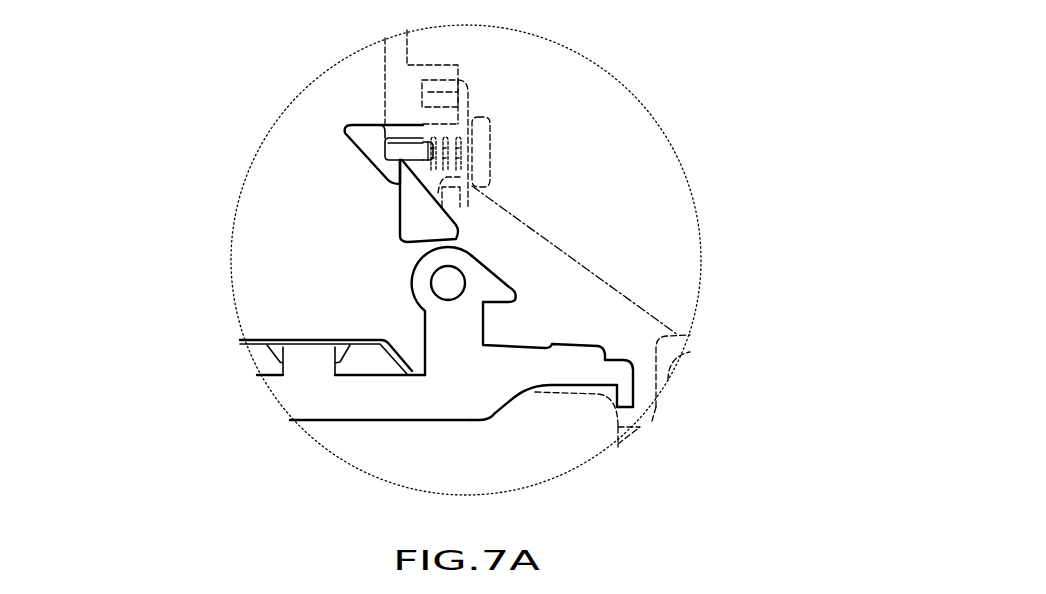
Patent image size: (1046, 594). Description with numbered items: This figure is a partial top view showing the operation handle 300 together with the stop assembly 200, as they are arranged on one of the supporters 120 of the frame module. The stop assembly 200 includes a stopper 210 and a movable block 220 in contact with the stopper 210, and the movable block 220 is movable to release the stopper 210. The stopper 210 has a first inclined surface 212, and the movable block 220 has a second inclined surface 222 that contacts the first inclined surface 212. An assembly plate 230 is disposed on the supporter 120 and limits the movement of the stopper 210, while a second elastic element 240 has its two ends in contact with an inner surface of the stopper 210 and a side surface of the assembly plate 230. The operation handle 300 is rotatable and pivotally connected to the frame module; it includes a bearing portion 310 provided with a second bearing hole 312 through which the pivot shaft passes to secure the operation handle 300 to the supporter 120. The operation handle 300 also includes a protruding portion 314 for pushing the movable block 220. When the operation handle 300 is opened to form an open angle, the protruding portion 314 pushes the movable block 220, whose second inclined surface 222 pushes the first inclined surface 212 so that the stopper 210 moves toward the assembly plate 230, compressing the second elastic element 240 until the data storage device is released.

The supporter 120 is at (390, 80).
The stop assembly 200 is at (205, 89).
The stopper 210 is at (348, 128).
The first inclined surface 212 is at (428, 153).
The movable block 220 is at (420, 213).
The second inclined surface 222 is at (427, 188).
The assembly plate 230 is at (462, 104).
The second elastic element 240 is at (473, 114).
The operation handle 300 is at (442, 392).
The bearing portion 310 is at (421, 283).
The second bearing hole 312 is at (450, 288).
The protruding portion 314 is at (510, 289).